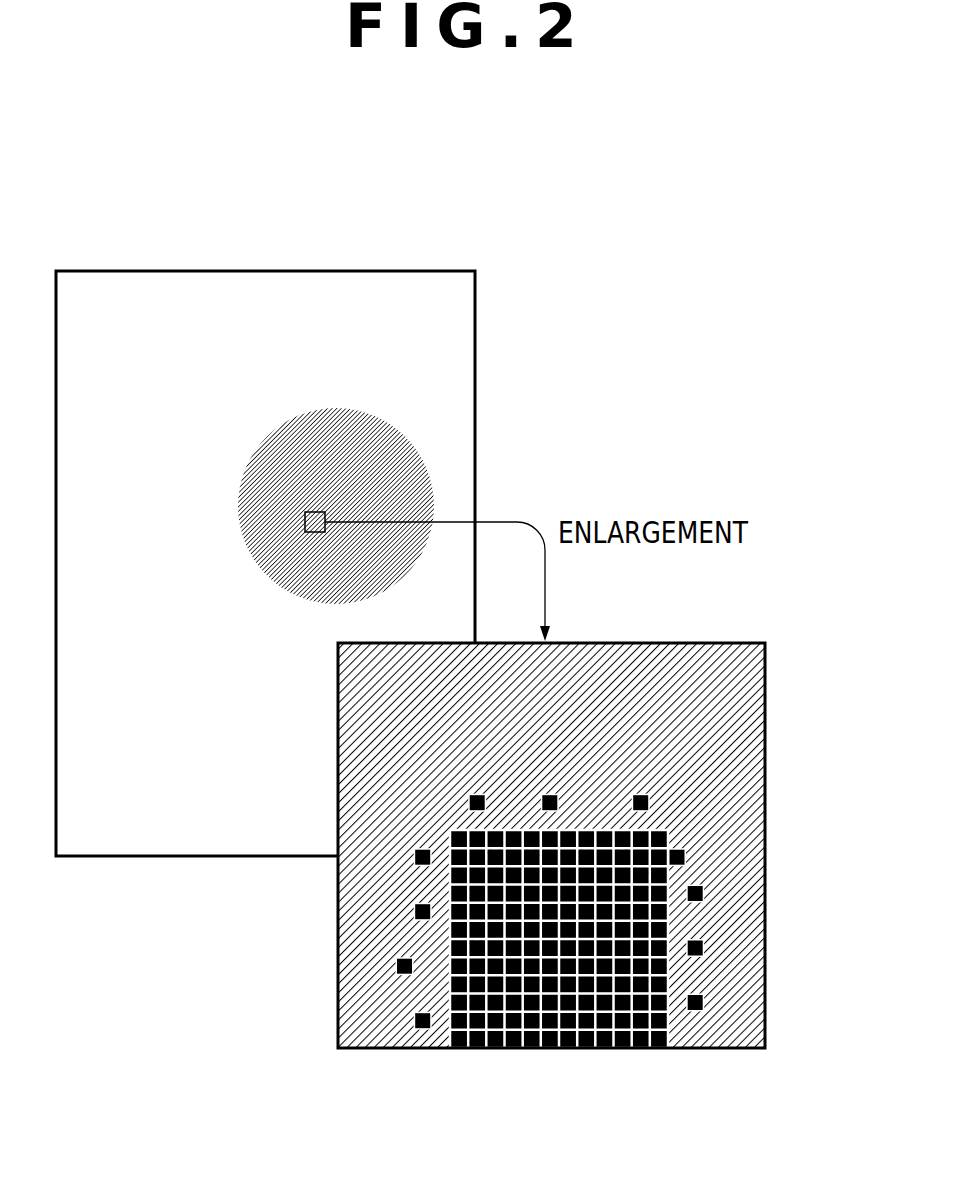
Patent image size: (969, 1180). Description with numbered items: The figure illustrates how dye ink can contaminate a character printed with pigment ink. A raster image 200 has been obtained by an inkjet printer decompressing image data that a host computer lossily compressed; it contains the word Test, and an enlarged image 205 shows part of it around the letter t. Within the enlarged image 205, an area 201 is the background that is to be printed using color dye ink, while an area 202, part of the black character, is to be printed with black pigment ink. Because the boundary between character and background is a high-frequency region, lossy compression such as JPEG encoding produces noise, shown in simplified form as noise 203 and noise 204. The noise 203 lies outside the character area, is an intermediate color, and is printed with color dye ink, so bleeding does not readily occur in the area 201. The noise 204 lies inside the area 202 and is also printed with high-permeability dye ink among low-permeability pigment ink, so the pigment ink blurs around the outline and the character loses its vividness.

The raster image 200 is at (428, 270).
The area 201 is at (745, 695).
The area 202 is at (585, 1040).
The noise 203 is at (704, 1002).
The noise 204 is at (640, 1020).
The enlarged image 205 is at (724, 643).